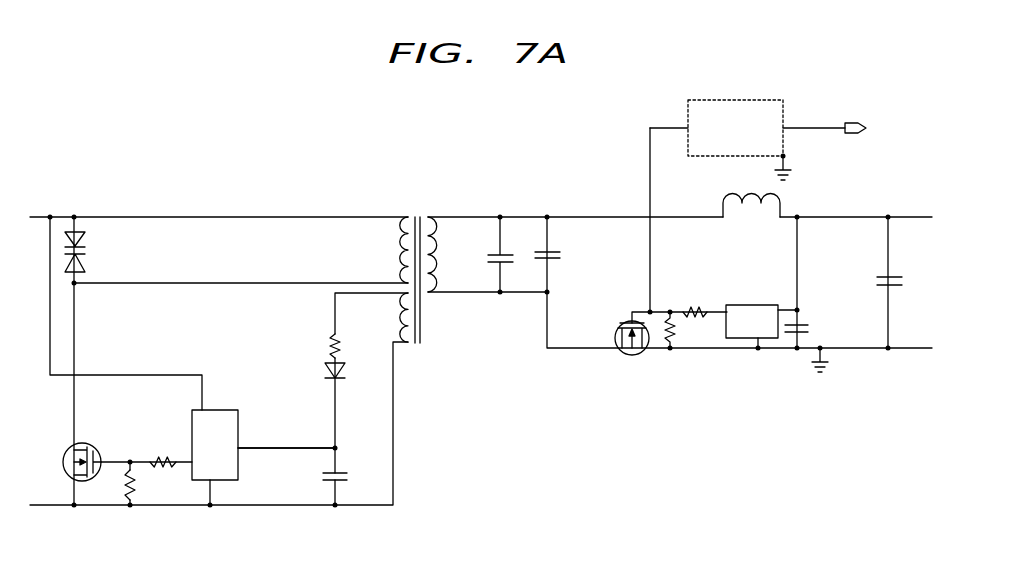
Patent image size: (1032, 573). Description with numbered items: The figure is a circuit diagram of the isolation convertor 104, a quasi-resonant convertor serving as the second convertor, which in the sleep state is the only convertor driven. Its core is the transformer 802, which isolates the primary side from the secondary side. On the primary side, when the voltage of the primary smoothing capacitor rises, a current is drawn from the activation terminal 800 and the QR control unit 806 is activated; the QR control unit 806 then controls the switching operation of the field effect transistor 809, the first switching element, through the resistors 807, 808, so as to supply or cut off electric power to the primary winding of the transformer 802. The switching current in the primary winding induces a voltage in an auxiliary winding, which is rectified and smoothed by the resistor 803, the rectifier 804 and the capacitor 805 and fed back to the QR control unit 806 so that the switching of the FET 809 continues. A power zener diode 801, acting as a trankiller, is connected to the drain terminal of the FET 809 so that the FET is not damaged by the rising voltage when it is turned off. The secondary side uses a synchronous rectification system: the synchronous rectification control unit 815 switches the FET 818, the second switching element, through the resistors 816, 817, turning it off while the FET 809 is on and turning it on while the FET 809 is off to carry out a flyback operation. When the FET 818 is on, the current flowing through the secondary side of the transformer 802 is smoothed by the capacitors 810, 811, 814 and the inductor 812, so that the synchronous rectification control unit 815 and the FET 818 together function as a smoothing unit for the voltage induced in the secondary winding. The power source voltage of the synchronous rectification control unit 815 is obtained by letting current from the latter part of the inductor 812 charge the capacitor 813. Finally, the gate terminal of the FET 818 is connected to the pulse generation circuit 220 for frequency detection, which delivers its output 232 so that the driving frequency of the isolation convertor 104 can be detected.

The isolation convertor 104 is at (540, 147).
The pulse generation circuit 220 is at (738, 100).
The output signal 232 is at (855, 122).
The activation terminal 800 is at (206, 410).
The power zener diode 801 is at (85, 262).
The transformer 802 is at (418, 212).
The resistor 803 is at (328, 344).
The rectifier 804 is at (343, 364).
The capacitor 805 is at (346, 469).
The QR control unit 806 is at (240, 440).
The resistor 807 is at (166, 455).
The resistor 808 is at (135, 492).
The field effect transistor 809 is at (90, 443).
The capacitor 810 is at (497, 253).
The capacitor 811 is at (560, 250).
The inductor 812 is at (725, 200).
The capacitor 813 is at (805, 324).
The capacitor 814 is at (878, 277).
The synchronous rectification control unit 815 is at (755, 305).
The resistor 816 is at (688, 308).
The resistor 817 is at (676, 338).
The FET 818 is at (620, 355).